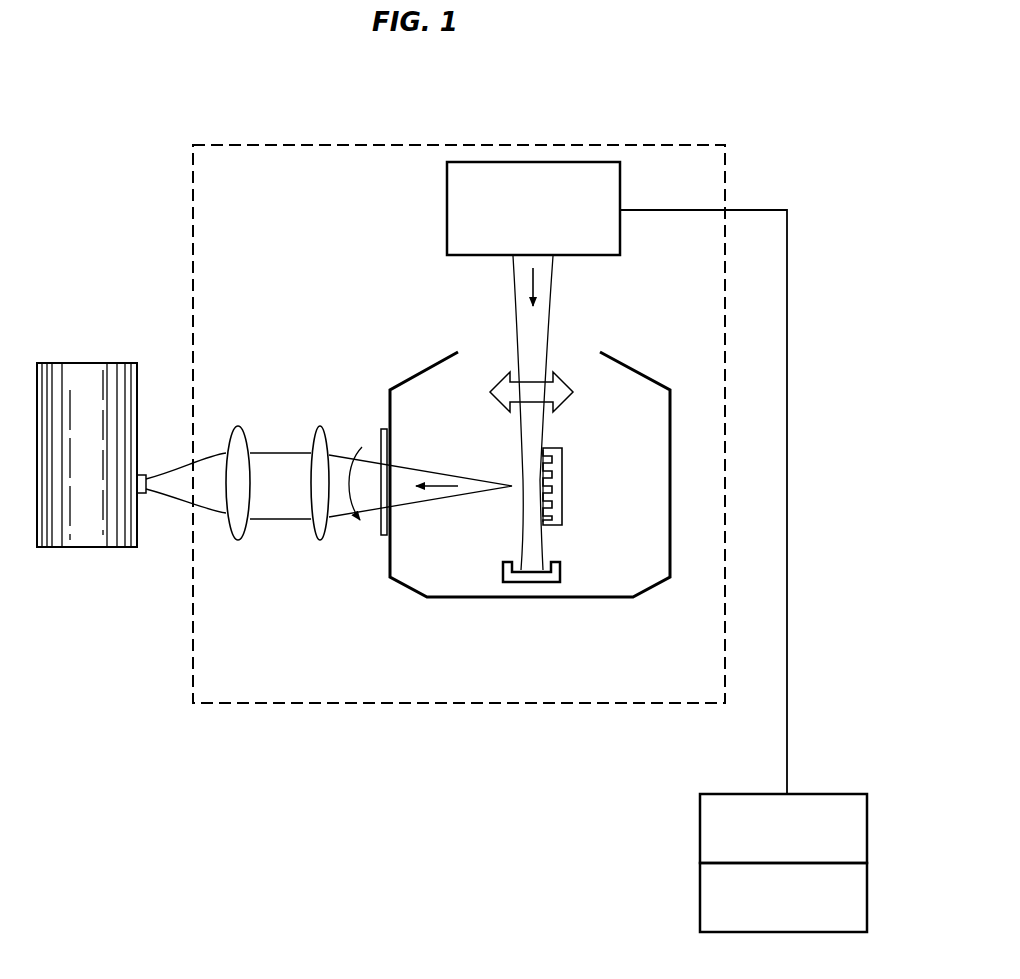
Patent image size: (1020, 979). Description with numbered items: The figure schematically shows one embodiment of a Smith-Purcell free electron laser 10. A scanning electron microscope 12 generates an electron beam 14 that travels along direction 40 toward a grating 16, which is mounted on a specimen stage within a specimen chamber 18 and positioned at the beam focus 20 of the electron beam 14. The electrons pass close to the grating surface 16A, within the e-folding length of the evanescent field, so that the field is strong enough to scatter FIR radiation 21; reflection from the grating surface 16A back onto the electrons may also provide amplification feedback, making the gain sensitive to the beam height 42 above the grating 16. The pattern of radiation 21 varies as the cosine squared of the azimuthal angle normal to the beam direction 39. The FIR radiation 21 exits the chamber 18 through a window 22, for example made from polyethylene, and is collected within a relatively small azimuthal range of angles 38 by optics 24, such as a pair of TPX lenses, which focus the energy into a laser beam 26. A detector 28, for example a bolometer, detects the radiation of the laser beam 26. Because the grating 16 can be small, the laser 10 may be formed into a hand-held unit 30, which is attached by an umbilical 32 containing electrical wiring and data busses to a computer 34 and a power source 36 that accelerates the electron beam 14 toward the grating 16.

The free electron laser 10 is at (118, 142).
The hand-held unit 30 is at (380, 145).
The scanning electron microscope 12 is at (522, 243).
The electron beam 14 is at (552, 280).
The direction 40 is at (518, 283).
The beam height 42 is at (562, 398).
The beam focus 20 is at (494, 455).
The grating 16 is at (565, 505).
The grating surface 16A is at (547, 532).
The specimen chamber 18 is at (607, 599).
The beam direction 39 is at (440, 487).
The azimuthal range of angles 38 is at (360, 505).
The window 22 is at (374, 433).
The FIR radiation 21 is at (278, 442).
The optics 24 is at (240, 540).
The laser beam 26 is at (180, 500).
The detector 28 is at (92, 537).
The umbilical 32 is at (788, 735).
The power source 36 is at (772, 852).
The computer 34 is at (772, 920).